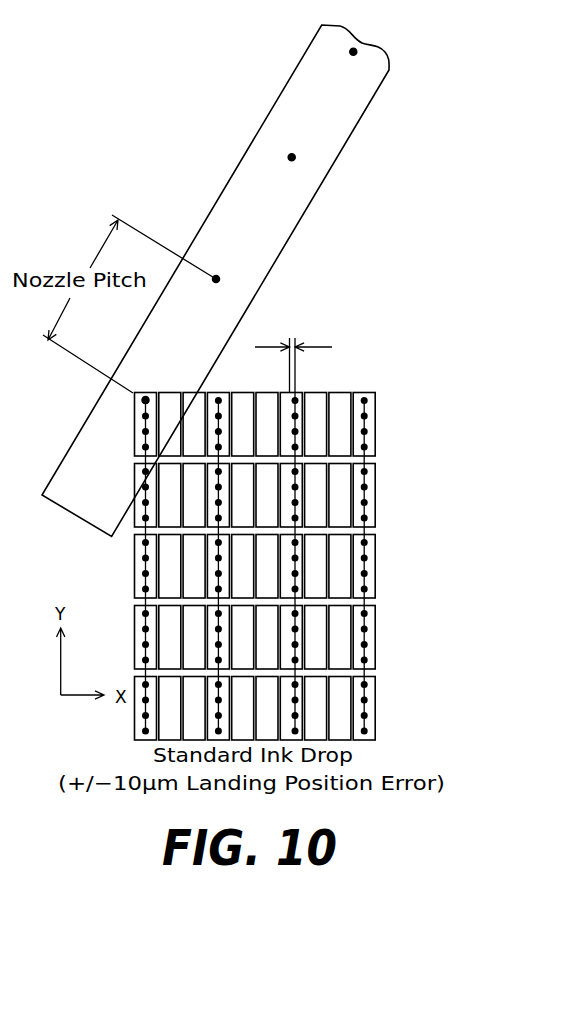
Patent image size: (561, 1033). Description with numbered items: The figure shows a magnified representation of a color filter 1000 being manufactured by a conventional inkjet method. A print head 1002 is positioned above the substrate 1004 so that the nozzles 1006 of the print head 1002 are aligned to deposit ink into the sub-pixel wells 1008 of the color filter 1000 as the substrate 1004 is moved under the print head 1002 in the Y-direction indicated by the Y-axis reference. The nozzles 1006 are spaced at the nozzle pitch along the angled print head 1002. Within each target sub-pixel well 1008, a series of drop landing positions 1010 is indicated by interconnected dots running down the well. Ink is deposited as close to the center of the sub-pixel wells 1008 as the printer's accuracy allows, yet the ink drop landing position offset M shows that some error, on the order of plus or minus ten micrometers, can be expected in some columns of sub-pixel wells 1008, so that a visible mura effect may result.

The color filter 1000 is at (403, 220).
The print head 1002 is at (285, 86).
The substrate 1004 is at (376, 458).
The nozzles 1006 is at (353, 52).
The sub-pixel wells 1008 is at (209, 392).
The drop landing positions 1010 is at (146, 731).